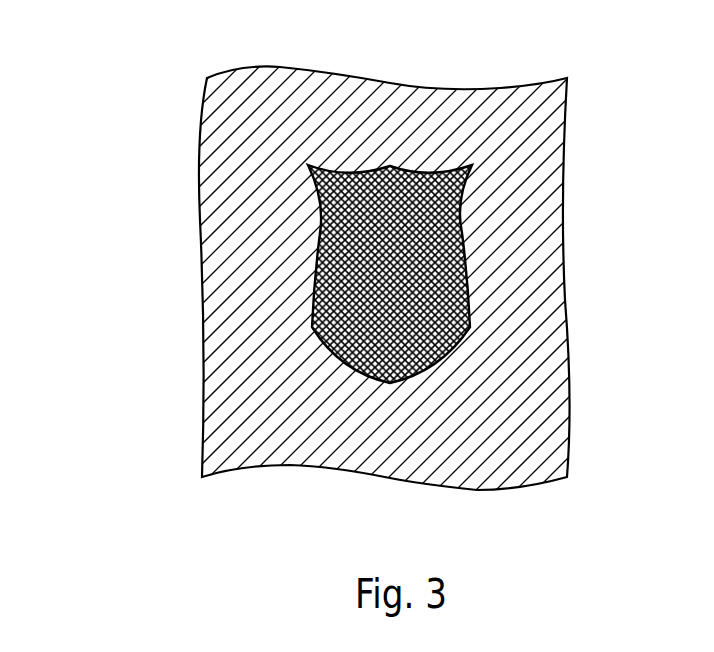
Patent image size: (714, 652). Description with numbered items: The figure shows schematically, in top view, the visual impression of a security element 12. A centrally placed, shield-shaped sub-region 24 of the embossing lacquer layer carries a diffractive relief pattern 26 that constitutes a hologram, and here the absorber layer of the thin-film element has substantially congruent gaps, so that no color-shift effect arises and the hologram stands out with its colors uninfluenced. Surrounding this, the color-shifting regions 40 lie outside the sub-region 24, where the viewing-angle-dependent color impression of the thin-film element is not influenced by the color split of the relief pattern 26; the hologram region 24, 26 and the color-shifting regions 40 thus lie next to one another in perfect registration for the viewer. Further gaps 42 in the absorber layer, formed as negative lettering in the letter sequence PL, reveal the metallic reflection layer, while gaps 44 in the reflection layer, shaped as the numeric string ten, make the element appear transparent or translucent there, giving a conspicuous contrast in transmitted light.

The security element 12 is at (357, 256).
The color-shifting regions 40 is at (322, 90).
The sub-region 24 is at (390, 212).
The diffractive relief pattern 26 is at (422, 177).
The gaps in the reflection layer 44 is at (509, 108).
The further gaps in the absorber layer 42 is at (522, 256).